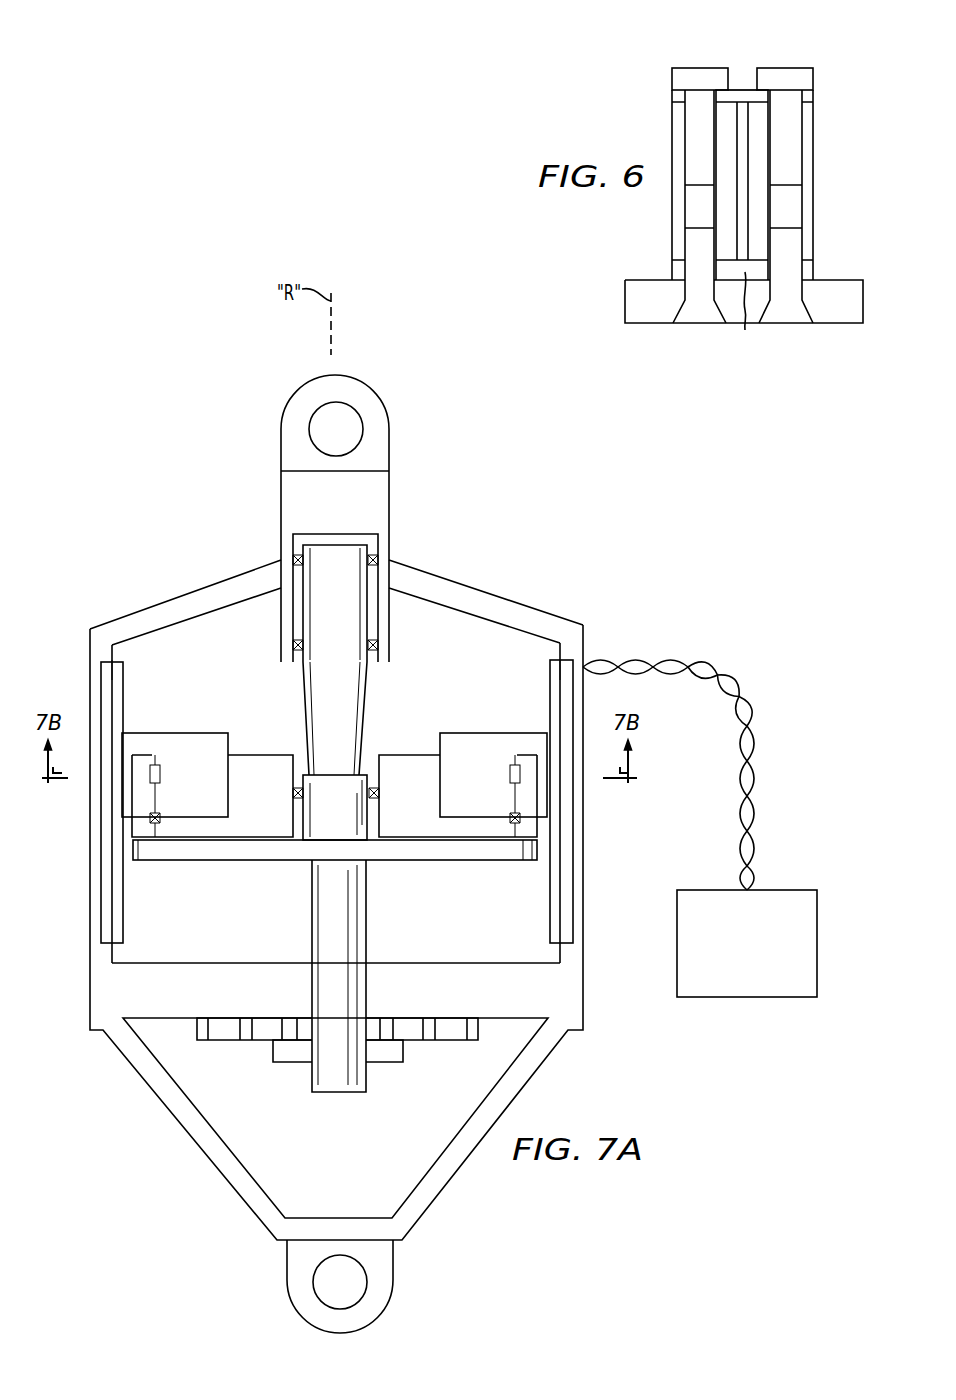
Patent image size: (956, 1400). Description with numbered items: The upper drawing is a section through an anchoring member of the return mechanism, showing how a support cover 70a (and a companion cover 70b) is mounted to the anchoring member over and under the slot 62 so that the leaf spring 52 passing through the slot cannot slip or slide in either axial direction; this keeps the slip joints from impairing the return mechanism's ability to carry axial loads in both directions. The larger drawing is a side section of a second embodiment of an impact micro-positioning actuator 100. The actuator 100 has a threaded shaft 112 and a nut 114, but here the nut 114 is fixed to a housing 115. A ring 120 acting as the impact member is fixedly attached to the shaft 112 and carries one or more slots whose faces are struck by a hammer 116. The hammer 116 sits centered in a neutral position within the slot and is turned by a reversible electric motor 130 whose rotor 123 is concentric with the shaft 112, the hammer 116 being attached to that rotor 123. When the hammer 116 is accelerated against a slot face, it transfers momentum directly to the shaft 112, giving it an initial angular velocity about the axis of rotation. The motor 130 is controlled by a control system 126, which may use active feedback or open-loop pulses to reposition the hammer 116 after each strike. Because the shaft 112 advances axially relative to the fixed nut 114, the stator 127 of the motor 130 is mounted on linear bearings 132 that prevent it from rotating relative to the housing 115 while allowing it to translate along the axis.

In FIG. 6, the support cover 70a is at (744, 88).
In FIG. 6, the lower end of connecting member 70b is at (745, 330).
In FIG. 6, the leaf spring 52 is at (752, 157).
In FIG. 6, the slot 62 is at (759, 222).
In FIG. 7A, the impact actuator 100 is at (182, 348).
In FIG. 7A, the housing 115 is at (181, 590).
In FIG. 7A, the reversible electric motor 130 is at (420, 678).
In FIG. 7A, the stator 127 is at (172, 733).
In FIG. 7A, the rotor 123 is at (258, 755).
In FIG. 7A, the hammer 116 is at (479, 722).
In FIG. 7A, the linear bearings 132 is at (123, 899).
In FIG. 7A, the ring 120 is at (250, 860).
In FIG. 7A, the threaded shaft 112 is at (364, 900).
In FIG. 7A, the nut 114 is at (467, 953).
In FIG. 7A, the control system 126 is at (763, 955).